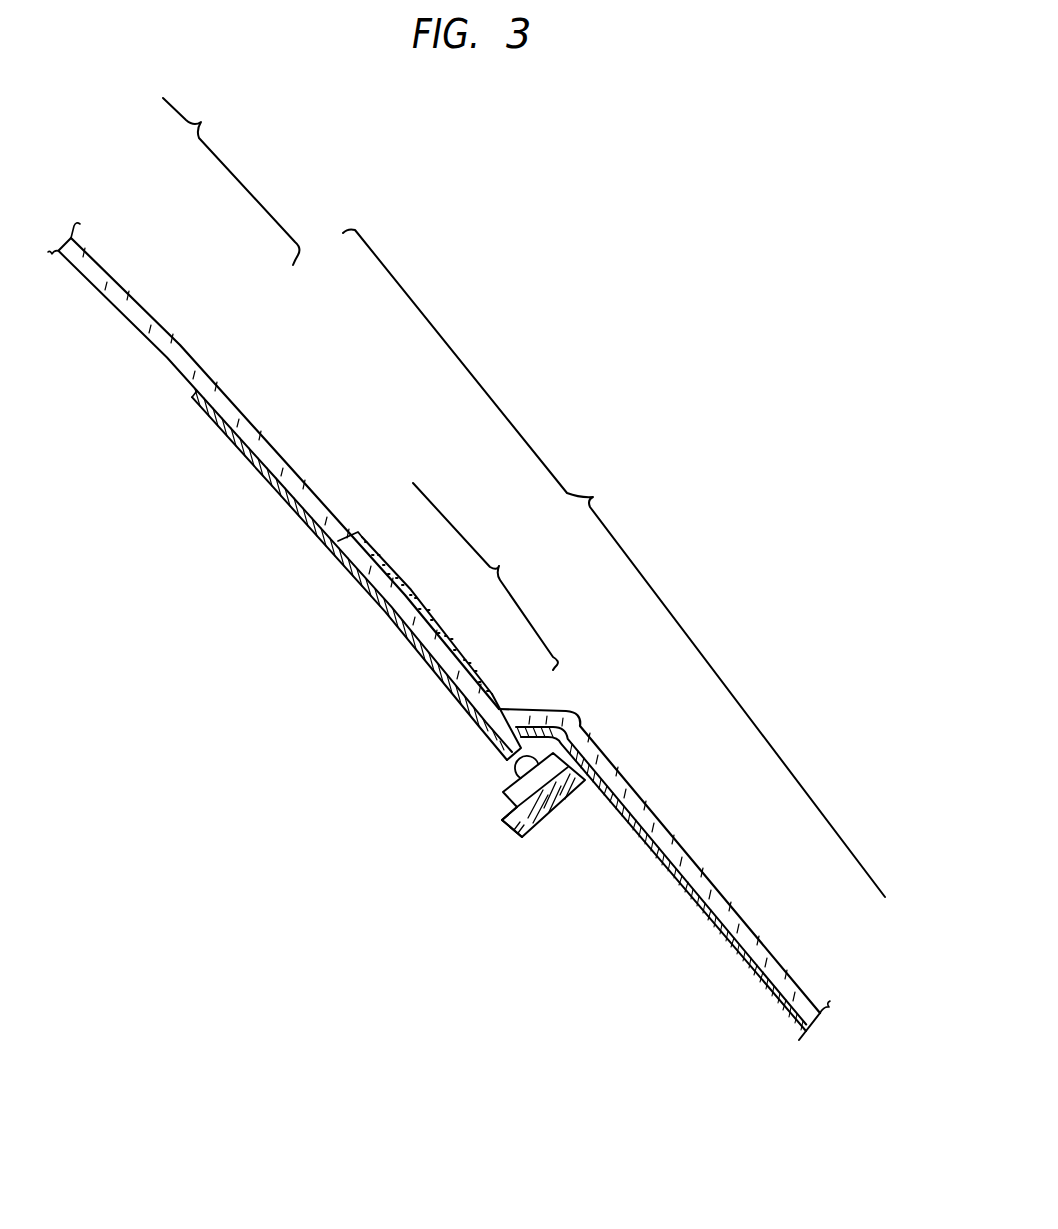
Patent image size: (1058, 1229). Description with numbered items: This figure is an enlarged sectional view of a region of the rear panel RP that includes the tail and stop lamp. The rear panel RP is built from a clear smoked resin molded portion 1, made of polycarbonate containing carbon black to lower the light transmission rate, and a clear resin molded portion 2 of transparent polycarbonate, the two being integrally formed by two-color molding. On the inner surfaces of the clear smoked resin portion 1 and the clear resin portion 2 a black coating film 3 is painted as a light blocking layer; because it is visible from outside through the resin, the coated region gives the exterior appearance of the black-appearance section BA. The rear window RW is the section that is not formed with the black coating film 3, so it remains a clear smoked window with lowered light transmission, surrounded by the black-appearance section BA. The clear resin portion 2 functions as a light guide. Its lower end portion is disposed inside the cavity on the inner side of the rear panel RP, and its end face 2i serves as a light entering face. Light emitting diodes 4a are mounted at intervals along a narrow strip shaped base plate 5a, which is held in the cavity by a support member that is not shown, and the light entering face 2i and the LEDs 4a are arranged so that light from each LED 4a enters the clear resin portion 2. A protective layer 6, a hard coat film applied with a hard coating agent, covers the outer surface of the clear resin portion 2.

The clear smoked resin molded portion 1 is at (156, 334).
The clear resin molded portion 2 is at (396, 586).
The black coating film 3 is at (267, 478).
The protective layer 6 is at (474, 680).
The end face 2i is at (509, 760).
The light emitting diode 4a is at (506, 798).
The base plate 5a is at (521, 837).
The rear window RW is at (231, 181).
The rear panel RP is at (492, 271).
The black-appearance section BA is at (531, 576).